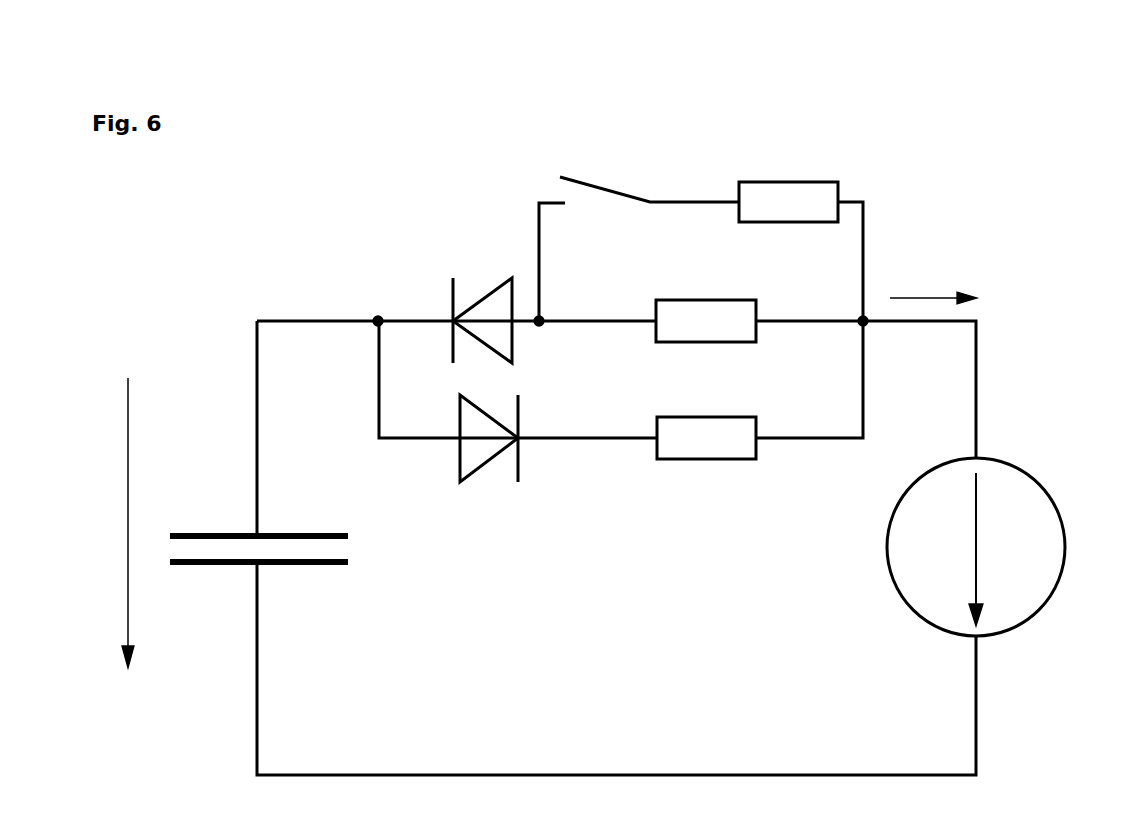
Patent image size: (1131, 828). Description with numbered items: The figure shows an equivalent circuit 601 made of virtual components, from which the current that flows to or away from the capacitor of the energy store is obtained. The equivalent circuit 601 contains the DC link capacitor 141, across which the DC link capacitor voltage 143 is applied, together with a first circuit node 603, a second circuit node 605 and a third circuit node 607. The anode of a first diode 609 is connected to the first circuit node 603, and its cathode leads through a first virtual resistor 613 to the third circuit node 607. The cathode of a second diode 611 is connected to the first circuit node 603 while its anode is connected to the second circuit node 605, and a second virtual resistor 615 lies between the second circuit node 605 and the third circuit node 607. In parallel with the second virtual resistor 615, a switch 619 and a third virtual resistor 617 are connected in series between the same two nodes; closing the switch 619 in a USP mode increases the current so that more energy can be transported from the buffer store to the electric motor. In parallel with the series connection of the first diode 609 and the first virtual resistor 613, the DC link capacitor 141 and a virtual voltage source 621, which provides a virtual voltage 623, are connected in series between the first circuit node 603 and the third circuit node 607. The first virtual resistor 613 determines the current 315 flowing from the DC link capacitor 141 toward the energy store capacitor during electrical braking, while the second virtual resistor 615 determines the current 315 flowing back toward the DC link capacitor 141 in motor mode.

The equivalent circuit 601 is at (1024, 138).
The first circuit node 603 is at (378, 321).
The second circuit node 605 is at (539, 321).
The third circuit node 607 is at (863, 321).
The first diode 609 is at (477, 468).
The second diode 611 is at (480, 293).
The first virtual resistor 613 is at (689, 450).
The second virtual resistor 615 is at (689, 333).
The third virtual resistor 617 is at (772, 214).
The switch 619 is at (592, 183).
The virtual voltage source 621 is at (1015, 627).
The virtual voltage 623 is at (978, 512).
The DC link capacitor 141 is at (233, 533).
The DC link capacitor voltage 143 is at (128, 530).
The current 315 is at (937, 297).